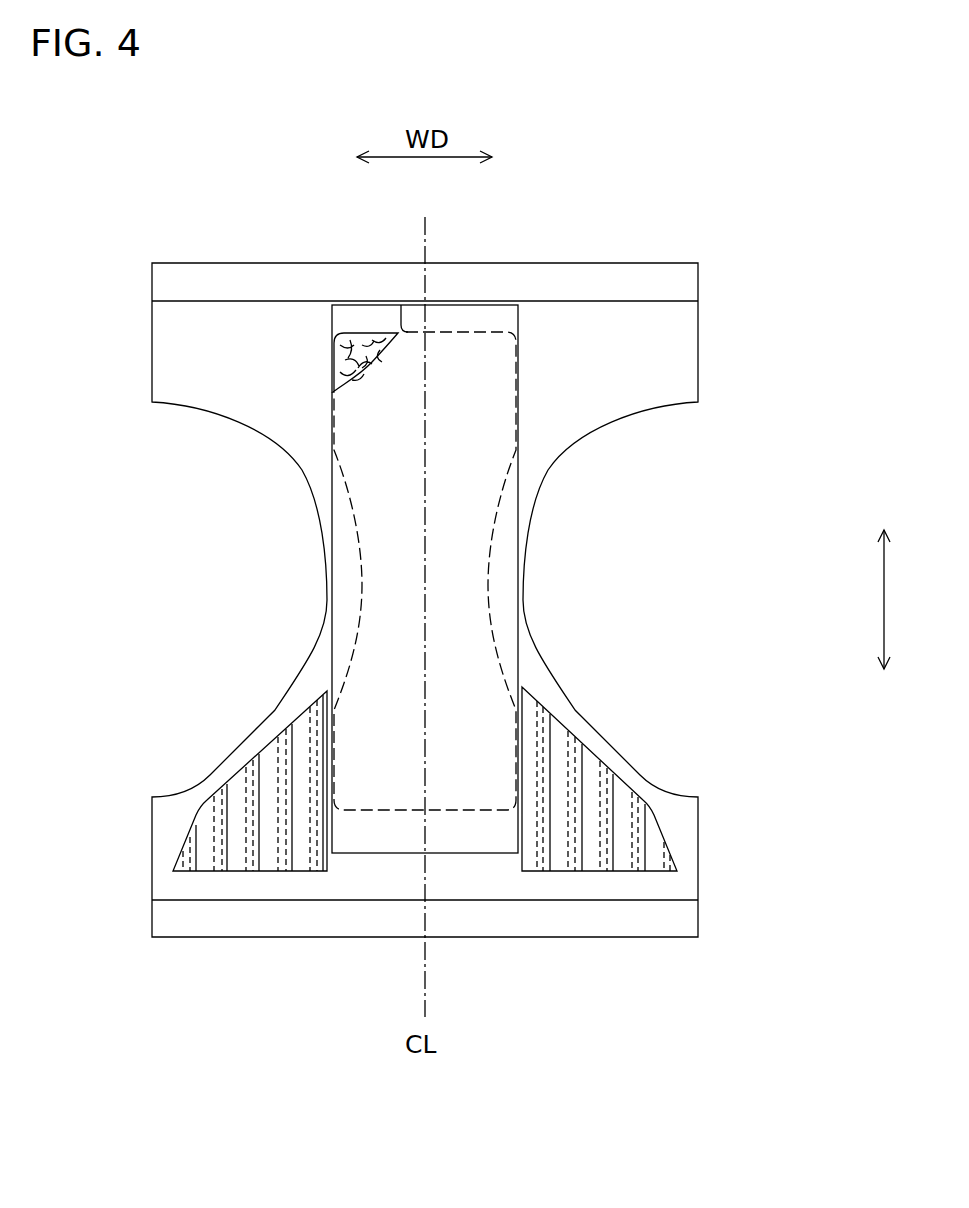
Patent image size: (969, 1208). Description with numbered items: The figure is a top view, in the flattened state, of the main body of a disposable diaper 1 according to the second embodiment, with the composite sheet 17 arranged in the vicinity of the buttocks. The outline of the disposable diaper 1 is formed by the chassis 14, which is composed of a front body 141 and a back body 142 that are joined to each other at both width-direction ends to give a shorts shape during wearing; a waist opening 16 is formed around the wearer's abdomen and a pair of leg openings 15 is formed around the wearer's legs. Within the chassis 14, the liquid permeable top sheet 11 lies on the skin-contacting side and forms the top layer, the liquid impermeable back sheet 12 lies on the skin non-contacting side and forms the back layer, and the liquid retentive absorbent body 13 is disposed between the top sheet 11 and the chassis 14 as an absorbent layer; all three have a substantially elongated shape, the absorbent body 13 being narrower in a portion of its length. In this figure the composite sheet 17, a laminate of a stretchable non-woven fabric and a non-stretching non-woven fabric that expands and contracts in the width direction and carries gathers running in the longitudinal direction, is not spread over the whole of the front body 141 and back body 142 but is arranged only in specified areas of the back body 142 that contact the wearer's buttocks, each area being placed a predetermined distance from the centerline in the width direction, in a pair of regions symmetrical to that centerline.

The disposable diaper 1 is at (172, 513).
The liquid permeable top sheet 11 is at (352, 544).
The liquid impermeable back sheet 12 is at (344, 320).
The liquid retentive absorbent body 13 is at (368, 333).
The chassis 14 is at (782, 263).
The front body 141 is at (711, 263).
The back body 142 is at (711, 800).
The leg openings 15 is at (711, 405).
The waist opening 16 is at (212, 236).
The composite sheet 17 is at (205, 850).